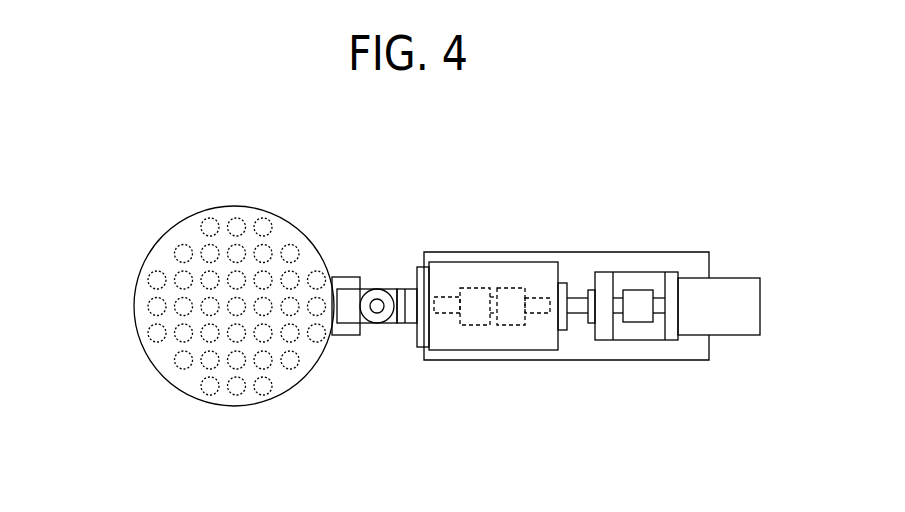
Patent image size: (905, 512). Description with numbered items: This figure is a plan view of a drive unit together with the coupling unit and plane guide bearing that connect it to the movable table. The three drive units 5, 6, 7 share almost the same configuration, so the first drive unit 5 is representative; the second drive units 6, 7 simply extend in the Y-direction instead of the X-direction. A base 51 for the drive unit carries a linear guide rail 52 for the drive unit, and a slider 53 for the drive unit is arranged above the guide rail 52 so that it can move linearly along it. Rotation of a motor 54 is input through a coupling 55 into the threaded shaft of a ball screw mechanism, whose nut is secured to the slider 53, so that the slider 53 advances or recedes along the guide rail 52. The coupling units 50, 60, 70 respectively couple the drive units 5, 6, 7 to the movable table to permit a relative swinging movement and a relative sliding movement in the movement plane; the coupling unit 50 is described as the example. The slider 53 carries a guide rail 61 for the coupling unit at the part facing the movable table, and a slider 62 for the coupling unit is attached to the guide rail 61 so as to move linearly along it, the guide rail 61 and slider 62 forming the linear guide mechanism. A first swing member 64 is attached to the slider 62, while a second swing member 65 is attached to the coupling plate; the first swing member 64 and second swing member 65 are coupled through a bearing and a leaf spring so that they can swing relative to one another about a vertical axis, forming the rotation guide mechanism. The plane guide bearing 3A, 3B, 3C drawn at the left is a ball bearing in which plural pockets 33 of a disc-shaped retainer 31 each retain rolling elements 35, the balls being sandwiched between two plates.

The filter 3A is at (186, 303).
The filter 3B is at (186, 303).
The filter 3C is at (118, 273).
The disc-shaped retainer 31 is at (193, 228).
The pockets 33 is at (182, 363).
The rolling elements 35 is at (236, 388).
The coupling unit 50 is at (389, 239).
The coupling unit 60 is at (389, 239).
The coupling unit 70 is at (389, 239).
The second swing member 65 is at (352, 307).
The first swing member 64 is at (385, 290).
The slider for the coupling unit 62 is at (408, 288).
The guide rail for the coupling unit 61 is at (418, 268).
The first drive unit 5 is at (597, 280).
The second drive unit 6 is at (597, 280).
The second drive unit 7 is at (597, 280).
The base for the drive unit 51 is at (688, 258).
The linear guide rail for the drive unit 52 is at (442, 312).
The slider for the drive unit 53 is at (517, 333).
The motor 54 is at (730, 320).
The coupling 55 is at (638, 313).